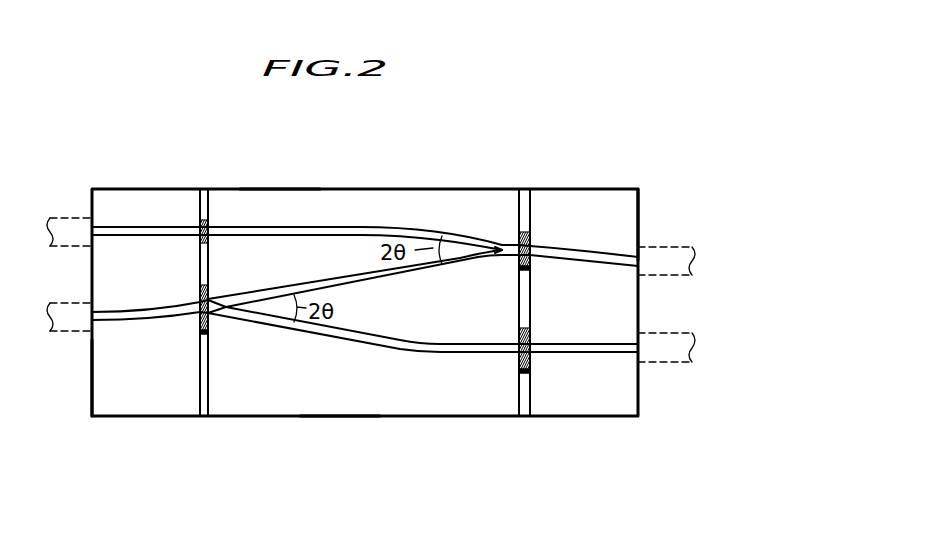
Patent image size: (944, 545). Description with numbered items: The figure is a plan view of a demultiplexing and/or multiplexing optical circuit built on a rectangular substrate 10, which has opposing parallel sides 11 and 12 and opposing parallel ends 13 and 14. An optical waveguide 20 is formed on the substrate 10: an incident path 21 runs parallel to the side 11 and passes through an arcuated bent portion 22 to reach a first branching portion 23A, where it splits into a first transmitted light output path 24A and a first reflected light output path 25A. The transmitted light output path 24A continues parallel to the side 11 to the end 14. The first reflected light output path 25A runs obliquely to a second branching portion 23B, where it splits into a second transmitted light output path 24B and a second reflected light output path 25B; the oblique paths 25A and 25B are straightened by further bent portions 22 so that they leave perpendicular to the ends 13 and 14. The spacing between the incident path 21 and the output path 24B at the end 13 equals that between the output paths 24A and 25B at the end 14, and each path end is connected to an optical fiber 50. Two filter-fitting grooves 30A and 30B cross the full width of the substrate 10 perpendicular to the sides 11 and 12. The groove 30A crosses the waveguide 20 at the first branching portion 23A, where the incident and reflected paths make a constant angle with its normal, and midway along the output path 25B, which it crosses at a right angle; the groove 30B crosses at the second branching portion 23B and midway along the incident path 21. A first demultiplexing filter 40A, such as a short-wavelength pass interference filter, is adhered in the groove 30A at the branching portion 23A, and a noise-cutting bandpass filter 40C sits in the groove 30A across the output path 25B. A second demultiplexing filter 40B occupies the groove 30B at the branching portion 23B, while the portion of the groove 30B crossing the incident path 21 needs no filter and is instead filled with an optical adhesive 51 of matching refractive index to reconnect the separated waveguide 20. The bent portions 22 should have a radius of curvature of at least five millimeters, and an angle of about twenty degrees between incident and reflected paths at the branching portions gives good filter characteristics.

The substrate 10 is at (407, 189).
The side of the substrate 11 is at (278, 188).
The side of the substrate 12 is at (335, 418).
The end of the substrate 13 is at (90, 387).
The end of the substrate 14 is at (640, 218).
The optical waveguide 20 is at (365, 300).
The incident path 21 is at (118, 233).
The arcuated bent portion 22 is at (365, 300).
The first branching portion 23A is at (503, 259).
The second branching portion 23B is at (217, 311).
The first transmitted light output path 24A is at (622, 258).
The second transmitted light output path 24B is at (135, 318).
The first reflected light output path 25A is at (345, 283).
The second reflected light output path 25B is at (590, 349).
The filter-fitting groove 30A is at (532, 400).
The filter-fitting groove 30B is at (212, 398).
The first demultiplexing filter 40A is at (528, 243).
The second demultiplexing filter 40B is at (208, 293).
The noise-cutting filter 40C is at (520, 358).
The optical fiber 50 is at (78, 217).
The optical adhesive 51 is at (209, 226).